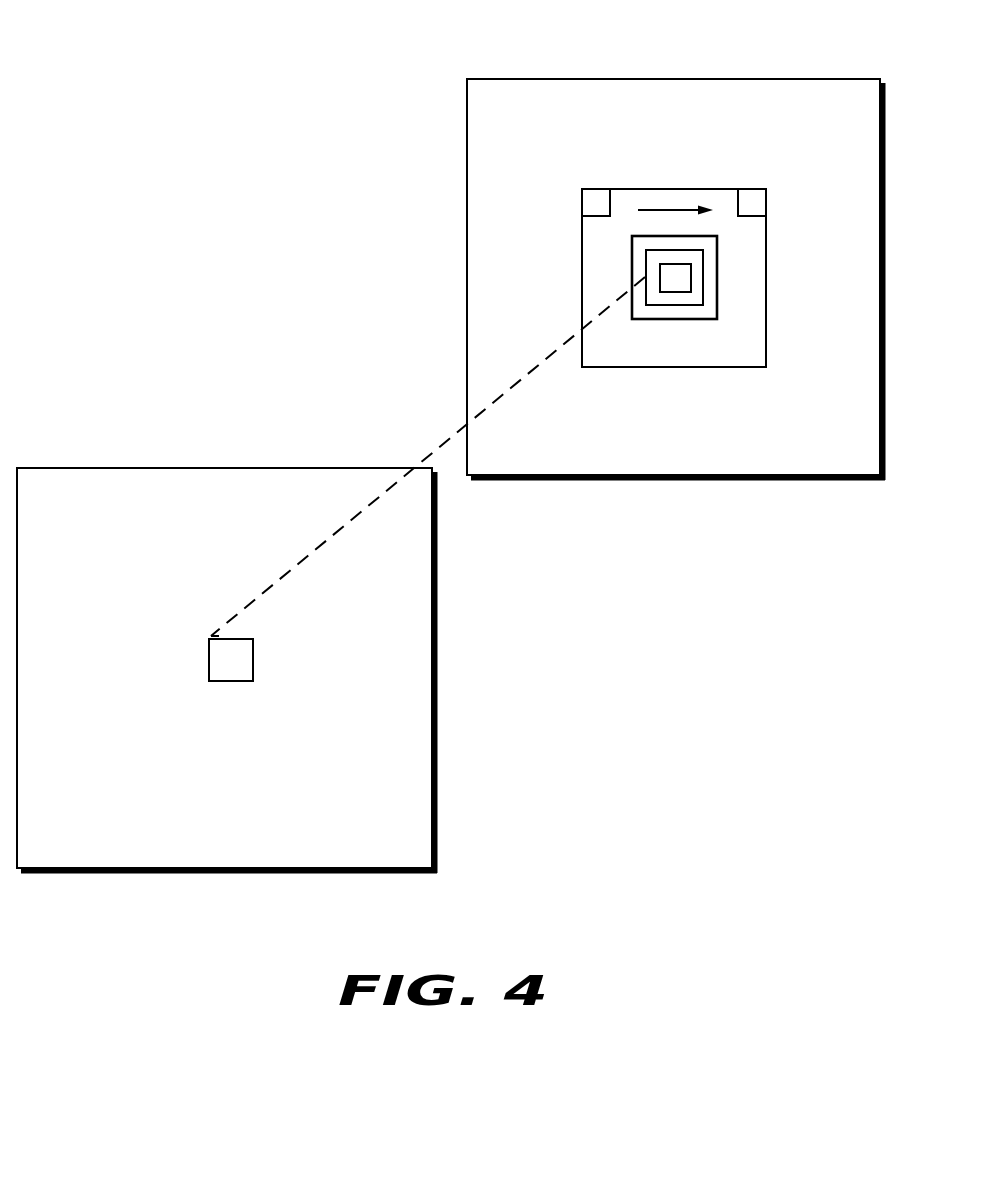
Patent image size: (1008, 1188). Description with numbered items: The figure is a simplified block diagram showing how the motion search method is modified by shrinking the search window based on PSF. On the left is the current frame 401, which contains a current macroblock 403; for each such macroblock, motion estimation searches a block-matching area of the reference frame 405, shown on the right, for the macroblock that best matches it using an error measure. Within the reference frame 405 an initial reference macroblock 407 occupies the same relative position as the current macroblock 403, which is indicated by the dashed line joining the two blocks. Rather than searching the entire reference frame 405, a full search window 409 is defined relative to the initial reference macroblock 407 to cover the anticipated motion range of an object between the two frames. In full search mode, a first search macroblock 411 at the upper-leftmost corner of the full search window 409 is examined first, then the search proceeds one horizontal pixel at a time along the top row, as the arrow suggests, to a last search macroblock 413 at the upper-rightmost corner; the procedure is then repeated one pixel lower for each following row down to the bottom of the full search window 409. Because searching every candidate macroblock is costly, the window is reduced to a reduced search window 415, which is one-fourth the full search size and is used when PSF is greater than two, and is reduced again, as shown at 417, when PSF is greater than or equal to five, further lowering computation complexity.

The current frame 401 is at (386, 835).
The current macroblock 403 is at (228, 683).
The reference frame 405 is at (837, 442).
The initial reference macroblock 407 is at (656, 271).
The full search window 409 is at (670, 188).
The first search macroblock 411 is at (593, 196).
The last search macroblock 413 is at (750, 196).
The reduced search window 415 is at (718, 278).
The further reduced search window 417 is at (676, 306).